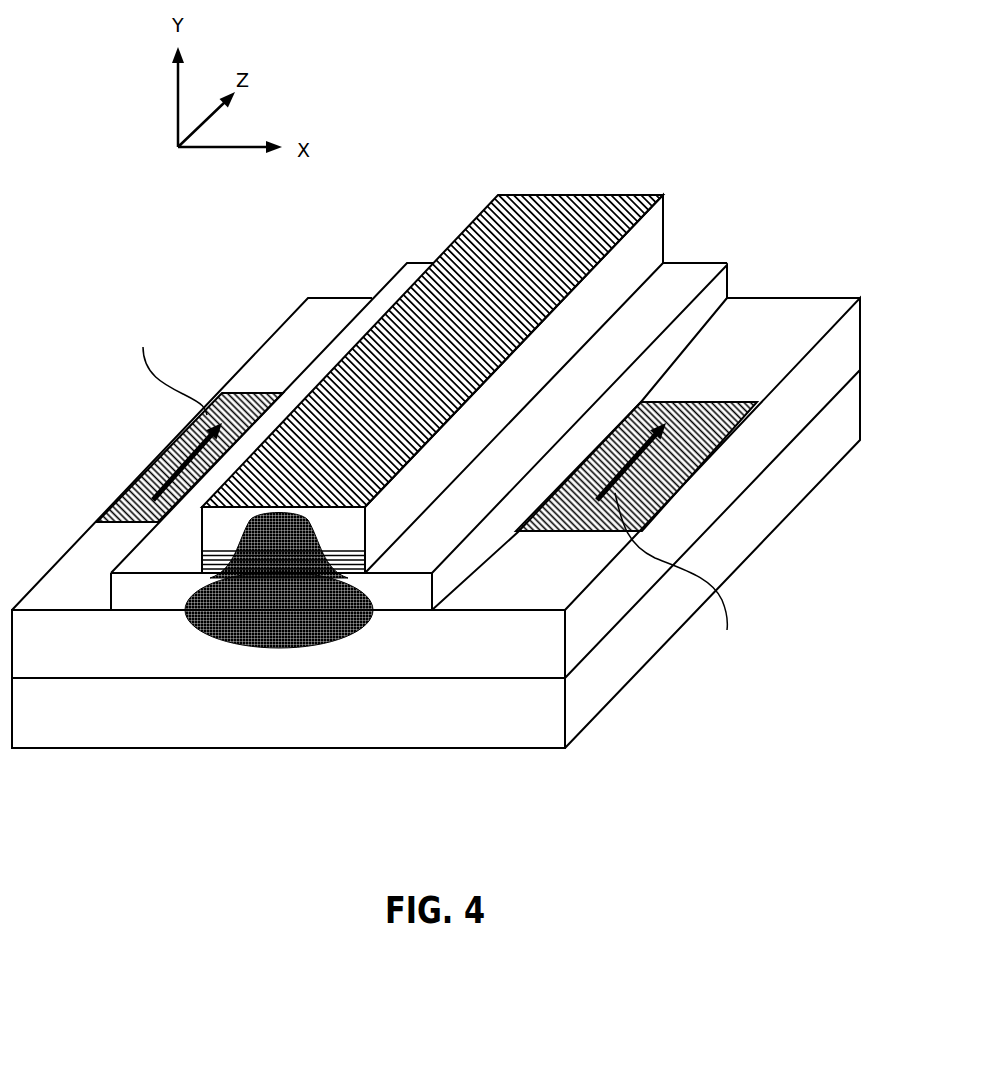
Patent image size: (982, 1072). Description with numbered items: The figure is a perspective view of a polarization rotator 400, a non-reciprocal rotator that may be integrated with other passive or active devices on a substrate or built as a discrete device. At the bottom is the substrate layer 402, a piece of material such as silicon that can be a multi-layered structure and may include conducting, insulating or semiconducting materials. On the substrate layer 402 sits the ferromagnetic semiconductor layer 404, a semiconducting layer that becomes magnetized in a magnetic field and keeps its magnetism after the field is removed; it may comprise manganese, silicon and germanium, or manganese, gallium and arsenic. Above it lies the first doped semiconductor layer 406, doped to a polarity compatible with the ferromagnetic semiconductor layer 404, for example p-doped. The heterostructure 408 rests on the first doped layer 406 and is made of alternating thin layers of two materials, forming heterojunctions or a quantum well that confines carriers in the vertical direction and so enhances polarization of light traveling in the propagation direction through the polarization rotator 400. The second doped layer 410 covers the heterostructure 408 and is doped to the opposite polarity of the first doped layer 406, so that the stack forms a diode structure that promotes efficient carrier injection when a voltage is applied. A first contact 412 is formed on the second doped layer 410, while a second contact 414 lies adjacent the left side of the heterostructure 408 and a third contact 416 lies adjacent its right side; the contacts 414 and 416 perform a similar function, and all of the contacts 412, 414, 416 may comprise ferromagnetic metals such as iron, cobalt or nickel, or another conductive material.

The polarization rotator 400 is at (760, 124).
The substrate layer 402 is at (378, 728).
The ferromagnetic semiconductor layer 404 is at (500, 673).
The first doped semiconductor layer 406 is at (156, 603).
The heterostructure 408 is at (368, 557).
The second doped layer 410 is at (357, 536).
The first contact 412 is at (545, 193).
The second contact 414 is at (122, 498).
The third contact 416 is at (693, 402).